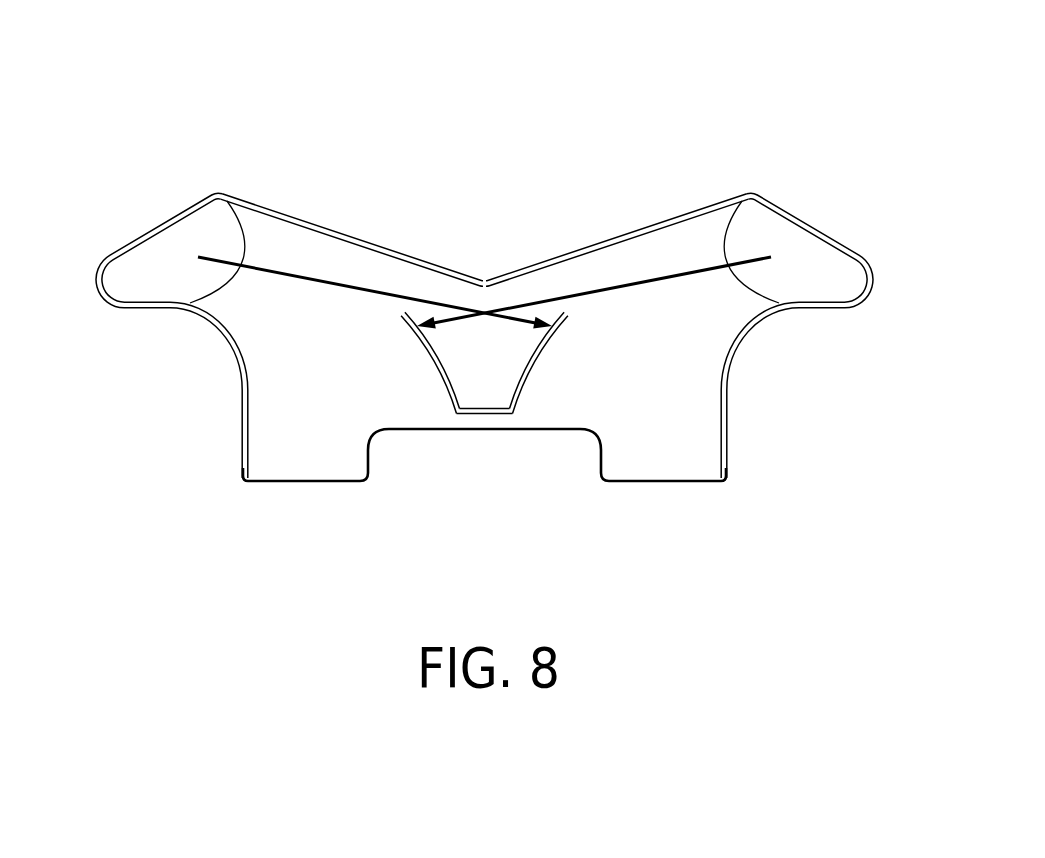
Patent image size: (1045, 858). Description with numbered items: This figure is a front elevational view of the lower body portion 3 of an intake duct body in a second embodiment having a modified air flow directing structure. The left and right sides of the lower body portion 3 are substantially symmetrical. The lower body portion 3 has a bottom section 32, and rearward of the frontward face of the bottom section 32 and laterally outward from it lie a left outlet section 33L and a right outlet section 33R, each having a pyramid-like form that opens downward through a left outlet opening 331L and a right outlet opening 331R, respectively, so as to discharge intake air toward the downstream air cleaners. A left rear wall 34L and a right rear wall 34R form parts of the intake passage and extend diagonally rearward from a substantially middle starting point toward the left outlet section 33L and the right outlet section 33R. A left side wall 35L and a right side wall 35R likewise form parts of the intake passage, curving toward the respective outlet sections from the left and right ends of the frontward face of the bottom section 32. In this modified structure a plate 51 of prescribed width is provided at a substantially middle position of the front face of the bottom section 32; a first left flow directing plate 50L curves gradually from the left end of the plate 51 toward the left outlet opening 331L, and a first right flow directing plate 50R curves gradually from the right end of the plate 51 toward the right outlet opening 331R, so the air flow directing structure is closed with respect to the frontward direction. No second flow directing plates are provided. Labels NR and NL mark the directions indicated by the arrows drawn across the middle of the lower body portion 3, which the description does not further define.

The lower body portion 3 is at (108, 188).
The bottom section 32 is at (587, 281).
The right outlet section 33R is at (97, 270).
The left outlet section 33L is at (872, 270).
The right outlet opening 331R is at (162, 273).
The left outlet opening 331L is at (807, 273).
The right rear wall 34R is at (323, 224).
The left rear wall 34L is at (646, 224).
The right side wall 35R is at (242, 434).
The left side wall 35L is at (727, 427).
The first right flow directing plate 50R is at (428, 348).
The first left flow directing plate 50L is at (541, 348).
The plate 51 is at (488, 413).
The right normal direction NR is at (375, 285).
The left normal direction NL is at (594, 285).